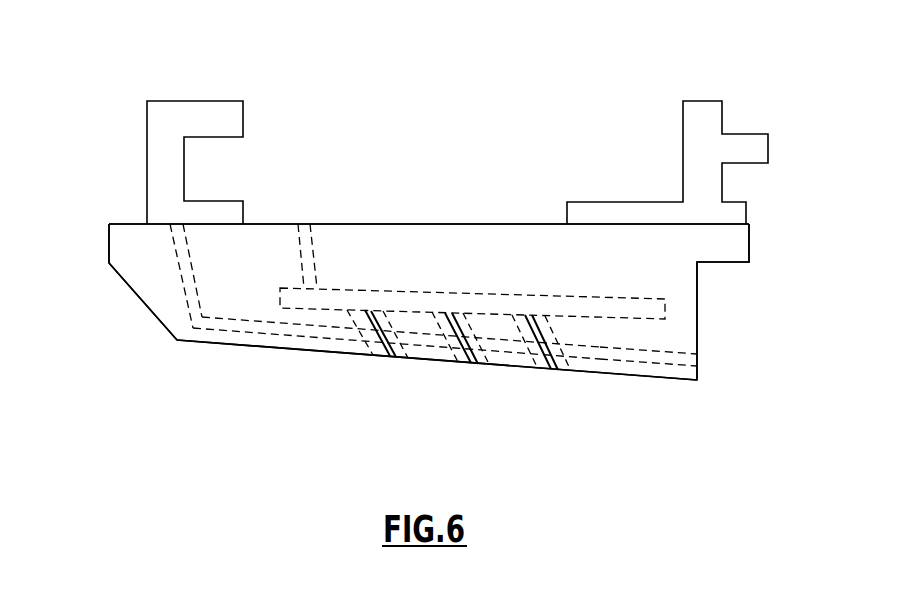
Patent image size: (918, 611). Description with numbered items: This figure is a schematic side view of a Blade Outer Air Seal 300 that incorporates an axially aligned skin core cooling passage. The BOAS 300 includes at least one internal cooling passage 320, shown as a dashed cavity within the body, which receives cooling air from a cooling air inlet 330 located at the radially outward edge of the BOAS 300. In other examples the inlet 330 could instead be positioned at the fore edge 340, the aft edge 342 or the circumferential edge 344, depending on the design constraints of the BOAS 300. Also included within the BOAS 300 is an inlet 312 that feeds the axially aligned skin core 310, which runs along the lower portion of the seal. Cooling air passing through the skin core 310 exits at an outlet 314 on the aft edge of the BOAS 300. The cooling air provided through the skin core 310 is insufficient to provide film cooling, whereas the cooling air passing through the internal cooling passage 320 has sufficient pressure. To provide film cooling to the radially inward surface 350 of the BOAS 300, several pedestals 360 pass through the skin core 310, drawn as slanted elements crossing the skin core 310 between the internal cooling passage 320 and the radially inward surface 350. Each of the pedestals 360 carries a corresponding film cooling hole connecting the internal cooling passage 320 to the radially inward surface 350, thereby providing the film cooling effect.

The Blade Outer Air Seal 300 is at (457, 90).
The axially aligned skin core 310 is at (313, 331).
The inlet 312 is at (177, 224).
The outlet 314 is at (697, 361).
The internal cooling passage 320 is at (353, 298).
The cooling air inlet 330 is at (307, 224).
The fore edge 340 is at (109, 243).
The aft edge 342 is at (697, 294).
The circumferential edge 344 is at (503, 257).
The radially inward surface 350 is at (527, 368).
The pedestals 360 is at (607, 410).